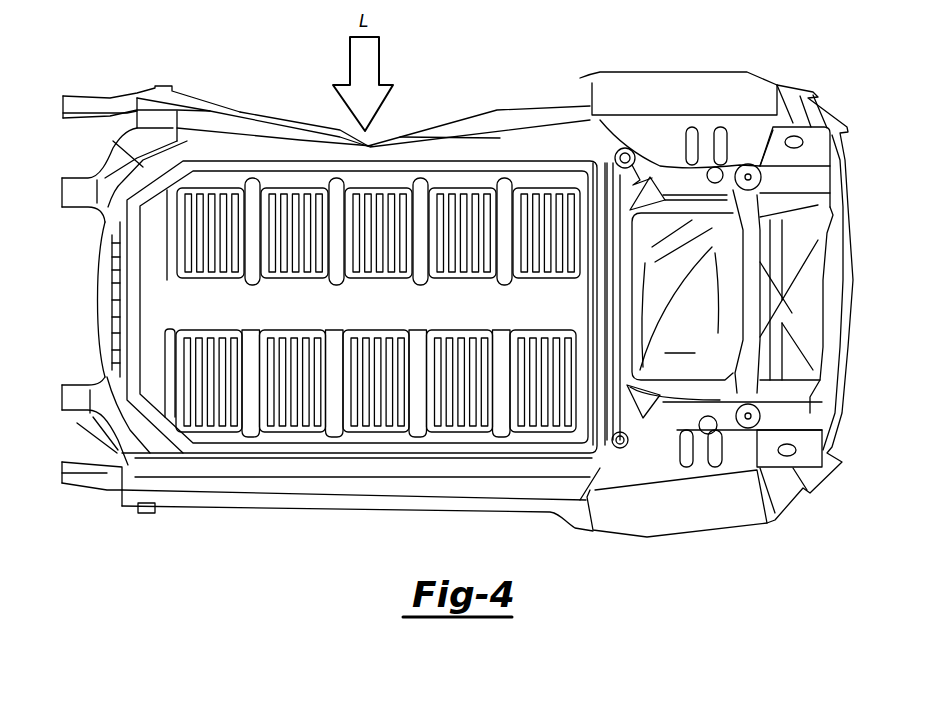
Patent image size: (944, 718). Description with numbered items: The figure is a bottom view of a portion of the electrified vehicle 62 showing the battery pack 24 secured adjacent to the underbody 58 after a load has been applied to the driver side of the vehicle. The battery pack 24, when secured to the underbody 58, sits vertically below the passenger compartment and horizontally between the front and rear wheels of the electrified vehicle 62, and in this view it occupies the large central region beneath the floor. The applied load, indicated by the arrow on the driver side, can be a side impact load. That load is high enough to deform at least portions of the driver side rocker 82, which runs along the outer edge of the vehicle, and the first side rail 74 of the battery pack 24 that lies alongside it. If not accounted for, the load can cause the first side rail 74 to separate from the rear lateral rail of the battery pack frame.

The driver side rocker 82 is at (188, 107).
The first side rail 74 is at (466, 137).
The battery pack 24 is at (537, 185).
The electrified vehicle 62 is at (813, 176).
The underbody 58 is at (800, 297).